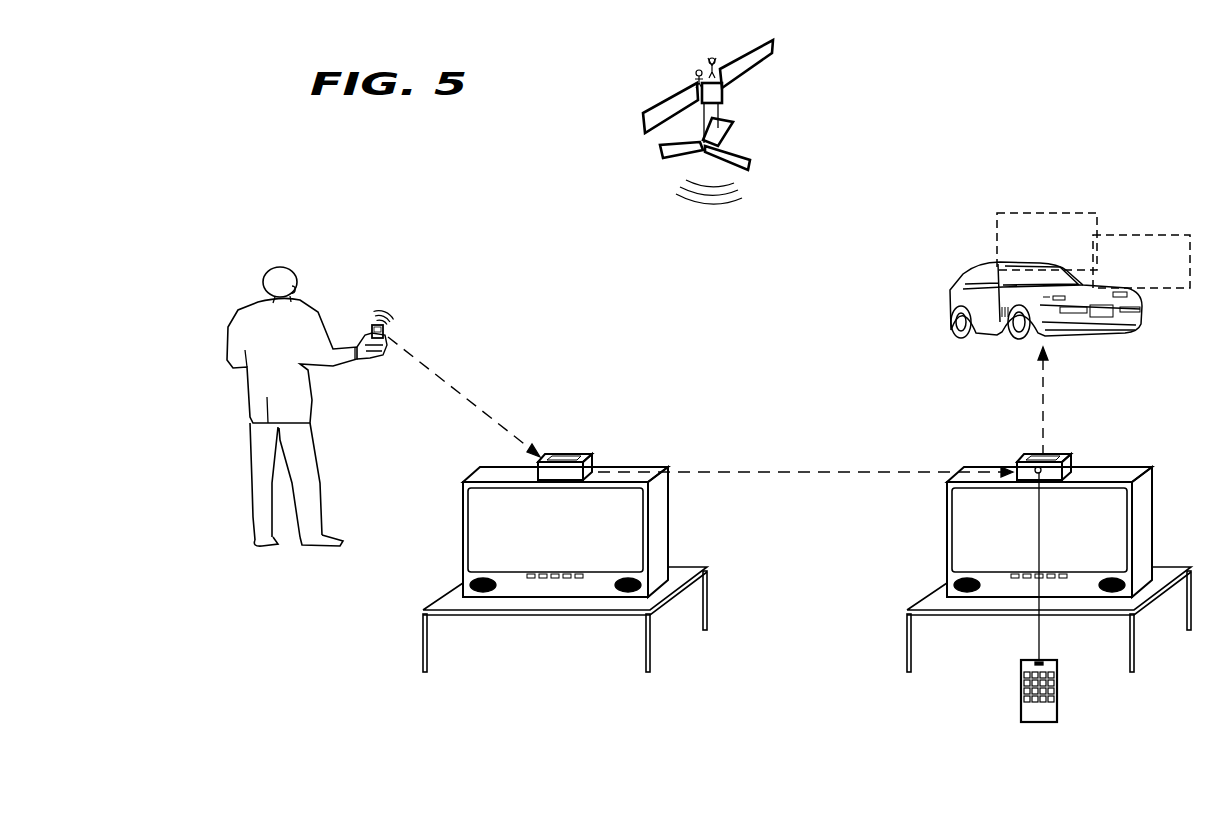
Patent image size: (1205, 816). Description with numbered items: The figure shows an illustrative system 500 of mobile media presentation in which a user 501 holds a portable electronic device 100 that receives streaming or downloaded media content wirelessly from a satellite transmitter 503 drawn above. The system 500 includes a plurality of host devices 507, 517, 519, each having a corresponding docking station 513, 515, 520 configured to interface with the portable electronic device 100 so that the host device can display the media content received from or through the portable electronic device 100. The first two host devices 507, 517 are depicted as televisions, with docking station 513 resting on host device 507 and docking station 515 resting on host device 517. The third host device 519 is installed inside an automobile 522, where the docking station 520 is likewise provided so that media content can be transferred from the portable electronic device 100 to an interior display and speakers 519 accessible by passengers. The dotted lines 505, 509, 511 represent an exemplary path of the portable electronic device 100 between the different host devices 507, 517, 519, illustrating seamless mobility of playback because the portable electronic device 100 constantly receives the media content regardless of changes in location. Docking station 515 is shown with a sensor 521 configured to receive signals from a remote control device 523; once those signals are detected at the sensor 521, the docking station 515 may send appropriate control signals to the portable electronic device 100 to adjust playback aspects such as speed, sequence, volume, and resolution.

The system of mobile media presentation 500 is at (404, 153).
The portable electronic device 100 is at (371, 325).
The user 501 is at (250, 306).
The satellite transmitter 503 is at (705, 64).
The dotted line 505 is at (445, 385).
The host device 507 is at (663, 519).
The dotted line 509 is at (810, 470).
The dotted line 511 is at (1046, 380).
The docking station 513 is at (562, 455).
The docking station 515 is at (1058, 455).
The host device 517 is at (1147, 519).
The host device 519 is at (1150, 235).
The docking station 520 is at (1056, 213).
The sensor 521 is at (1037, 462).
The automobile 522 is at (972, 281).
The remote control device 523 is at (1060, 687).